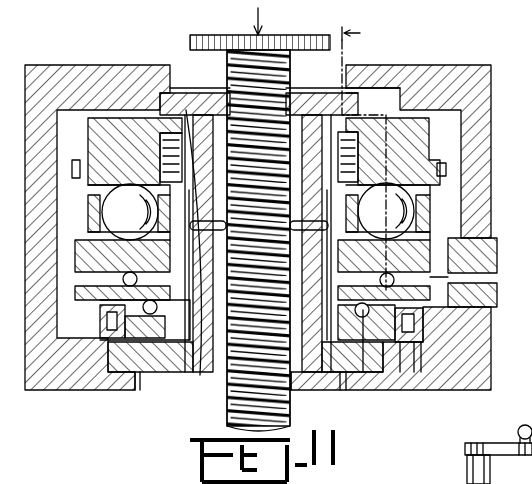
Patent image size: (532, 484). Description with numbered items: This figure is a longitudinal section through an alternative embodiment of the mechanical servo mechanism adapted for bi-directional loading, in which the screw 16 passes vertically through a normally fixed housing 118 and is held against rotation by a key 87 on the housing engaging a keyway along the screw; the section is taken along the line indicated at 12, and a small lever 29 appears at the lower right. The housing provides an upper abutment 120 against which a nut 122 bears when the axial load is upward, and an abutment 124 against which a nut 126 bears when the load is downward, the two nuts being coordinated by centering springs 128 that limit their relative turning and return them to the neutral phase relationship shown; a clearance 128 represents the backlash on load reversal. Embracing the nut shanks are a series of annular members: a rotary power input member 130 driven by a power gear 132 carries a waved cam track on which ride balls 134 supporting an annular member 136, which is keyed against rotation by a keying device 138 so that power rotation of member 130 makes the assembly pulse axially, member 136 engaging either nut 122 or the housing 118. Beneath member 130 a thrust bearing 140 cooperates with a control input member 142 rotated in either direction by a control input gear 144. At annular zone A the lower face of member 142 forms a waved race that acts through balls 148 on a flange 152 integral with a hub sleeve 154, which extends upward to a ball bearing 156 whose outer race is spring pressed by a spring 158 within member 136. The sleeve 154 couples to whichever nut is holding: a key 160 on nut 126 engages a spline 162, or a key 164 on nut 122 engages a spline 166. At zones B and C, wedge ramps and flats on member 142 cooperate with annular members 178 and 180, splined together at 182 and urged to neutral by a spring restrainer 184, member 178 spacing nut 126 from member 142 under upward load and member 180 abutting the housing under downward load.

The section line 12 is at (288, 149).
The screw 16 is at (229, 414).
The lever 29 is at (518, 433).
The key 87 is at (291, 389).
The housing 118 is at (456, 67).
The upper abutment 120 is at (350, 92).
The nut 122 is at (352, 103).
The abutment 124 is at (118, 373).
The nut 126 is at (140, 372).
The centering springs 128 is at (185, 110).
The rotary power input member 130 is at (428, 220).
The power gear 132 is at (497, 262).
The balls 134 is at (129, 212).
The annular member 136 is at (422, 150).
The keying device 138 is at (80, 157).
The thrust bearing 140 is at (85, 281).
The control input member 142 is at (88, 304).
The control input gear 144 is at (497, 296).
The balls 148 is at (152, 314).
The flange 152 is at (346, 372).
The hub sleeve 154 is at (152, 191).
The ball bearing 156 is at (163, 150).
The spring 158 is at (358, 166).
The key 160 is at (254, 252).
The spline 162 is at (186, 340).
The key 164 is at (188, 100).
The spline 166 is at (183, 90).
The annular member 178 is at (414, 375).
The annular member 180 is at (424, 340).
The spline 182 is at (110, 344).
The spring restrainer 184 is at (108, 316).
The annular zone A is at (363, 372).
The annular zone B is at (400, 372).
The annular zone C is at (421, 372).